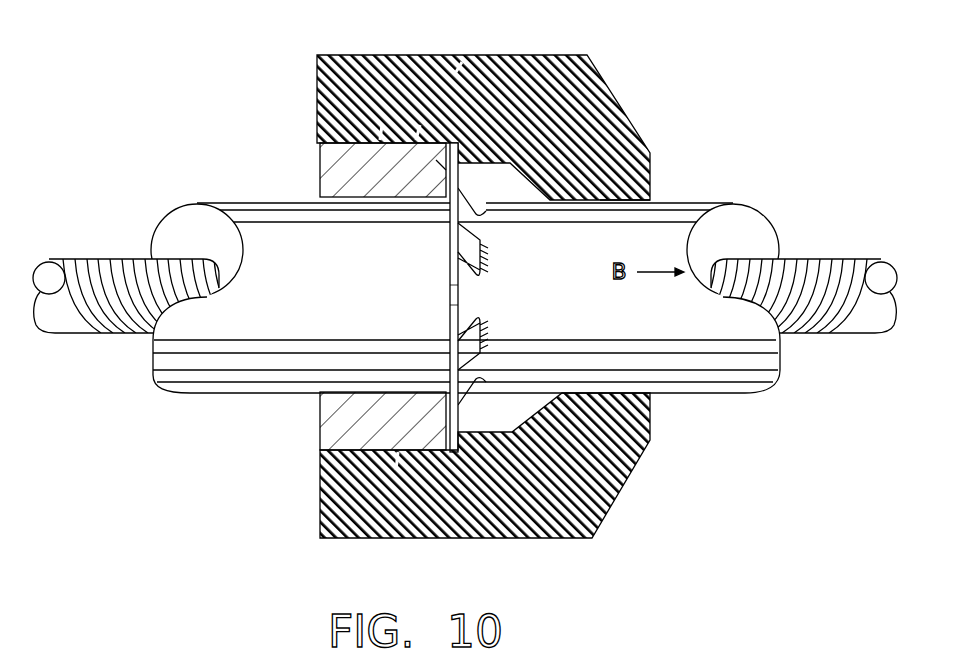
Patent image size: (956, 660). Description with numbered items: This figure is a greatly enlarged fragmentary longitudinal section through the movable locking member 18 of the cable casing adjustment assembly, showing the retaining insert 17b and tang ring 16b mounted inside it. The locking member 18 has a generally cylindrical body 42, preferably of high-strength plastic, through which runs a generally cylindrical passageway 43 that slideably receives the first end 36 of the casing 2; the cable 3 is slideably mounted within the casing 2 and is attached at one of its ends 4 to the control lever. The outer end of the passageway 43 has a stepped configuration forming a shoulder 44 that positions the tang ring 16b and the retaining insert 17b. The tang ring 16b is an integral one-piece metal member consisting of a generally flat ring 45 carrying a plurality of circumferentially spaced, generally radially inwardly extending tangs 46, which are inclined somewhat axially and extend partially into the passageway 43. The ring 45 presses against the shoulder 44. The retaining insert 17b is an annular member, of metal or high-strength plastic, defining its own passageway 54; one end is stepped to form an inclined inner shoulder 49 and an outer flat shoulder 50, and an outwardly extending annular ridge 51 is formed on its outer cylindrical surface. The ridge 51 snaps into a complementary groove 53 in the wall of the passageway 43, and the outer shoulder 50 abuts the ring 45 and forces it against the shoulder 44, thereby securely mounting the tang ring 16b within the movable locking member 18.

The casing 2 is at (465, 300).
The cable 3 is at (90, 258).
The end 4 is at (97, 315).
The first end 36 is at (183, 372).
The tang ring 16b is at (416, 140).
The retaining insert 17b is at (320, 163).
The movable locking member 18 is at (614, 92).
The body 42 is at (456, 72).
The passageway 43 is at (648, 200).
The shoulder 44 is at (458, 145).
The ring 45 is at (455, 292).
The tangs 46 is at (485, 258).
The inclined inner shoulder 49 is at (436, 165).
The outer flat shoulder 50 is at (447, 452).
The annular ridge 51 is at (398, 452).
The groove 53 is at (380, 140).
The passageway 54 is at (327, 393).